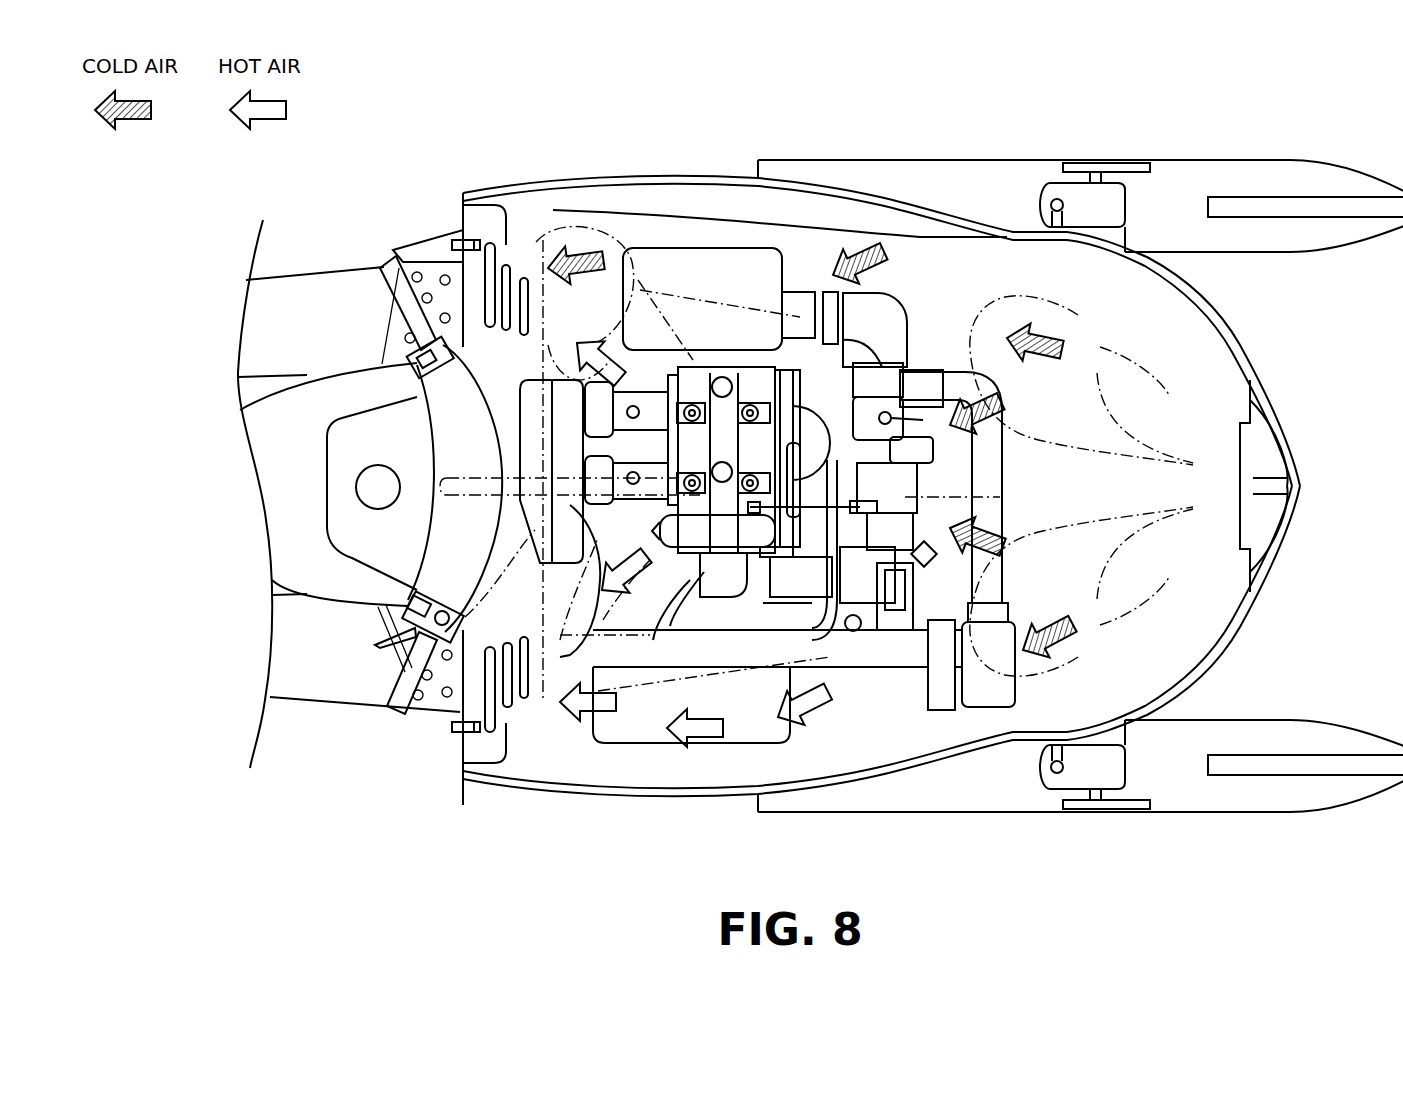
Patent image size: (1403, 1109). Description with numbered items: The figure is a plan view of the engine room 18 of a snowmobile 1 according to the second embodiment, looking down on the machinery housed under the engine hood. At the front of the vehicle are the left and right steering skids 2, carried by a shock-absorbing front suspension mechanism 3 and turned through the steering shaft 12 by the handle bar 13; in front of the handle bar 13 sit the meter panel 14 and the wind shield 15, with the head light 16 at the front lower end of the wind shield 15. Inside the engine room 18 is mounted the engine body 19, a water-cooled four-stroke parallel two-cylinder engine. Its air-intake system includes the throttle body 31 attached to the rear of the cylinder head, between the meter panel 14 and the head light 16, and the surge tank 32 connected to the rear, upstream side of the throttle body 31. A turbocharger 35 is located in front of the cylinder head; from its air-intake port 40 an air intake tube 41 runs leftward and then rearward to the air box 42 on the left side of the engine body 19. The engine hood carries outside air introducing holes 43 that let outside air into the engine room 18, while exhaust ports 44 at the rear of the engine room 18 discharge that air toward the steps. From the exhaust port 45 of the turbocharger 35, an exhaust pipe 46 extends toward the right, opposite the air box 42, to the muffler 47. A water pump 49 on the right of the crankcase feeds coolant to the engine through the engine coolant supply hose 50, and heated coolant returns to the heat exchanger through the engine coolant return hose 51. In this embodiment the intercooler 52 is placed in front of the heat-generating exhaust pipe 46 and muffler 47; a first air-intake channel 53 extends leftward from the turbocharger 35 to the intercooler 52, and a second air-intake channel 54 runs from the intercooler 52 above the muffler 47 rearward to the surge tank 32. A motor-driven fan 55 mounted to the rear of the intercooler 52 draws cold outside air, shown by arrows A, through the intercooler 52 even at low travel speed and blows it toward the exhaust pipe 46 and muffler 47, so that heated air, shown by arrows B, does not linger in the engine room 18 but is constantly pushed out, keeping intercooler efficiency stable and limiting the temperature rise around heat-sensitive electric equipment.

The snowmobile 1 is at (832, 100).
The steering skids 2 is at (1224, 180).
The front suspension mechanism 3 is at (1103, 190).
The steering shaft 12 is at (466, 497).
The handle bar 13 is at (392, 712).
The meter panel 14 is at (544, 735).
The wind shield 15 is at (693, 363).
The head light 16 is at (1000, 500).
The engine room 18 is at (1203, 367).
The engine body 19 is at (757, 597).
The throttle body 31 is at (545, 409).
The surge tank 32 is at (532, 452).
The turbocharger 35 is at (950, 355).
The air-intake port 40 is at (918, 355).
The air intake tube 41 is at (913, 295).
The air box 42 is at (665, 265).
The outside air introducing holes 43 is at (1167, 617).
The exhaust ports 44 is at (462, 238).
The exhaust port 45 is at (918, 472).
The exhaust pipe 46 is at (900, 607).
The muffler 47 is at (747, 745).
The water pump 49 is at (858, 632).
The engine coolant supply hose 50 is at (838, 610).
The engine coolant return hose 51 is at (653, 640).
The intercooler 52 is at (983, 700).
The first air-intake channel 53 is at (1000, 460).
The second air-intake channel 54 is at (887, 668).
The motor-driven fan 55 is at (943, 700).
The arrows A is at (1050, 335).
The arrows B is at (593, 714).